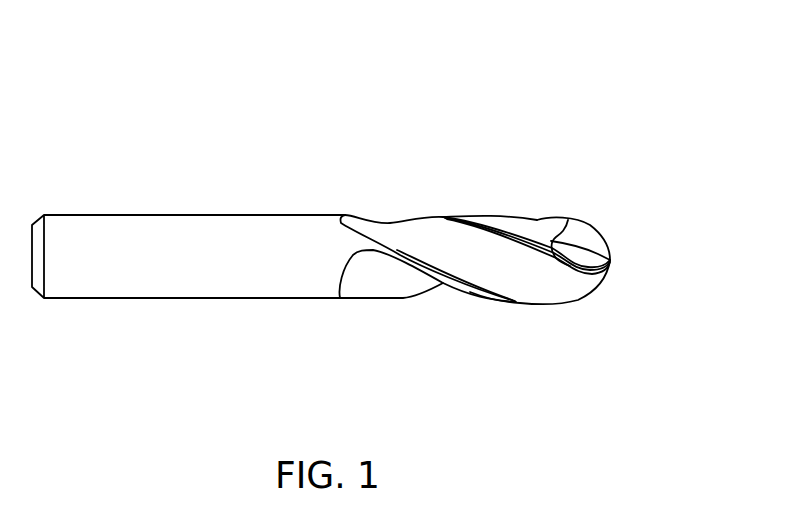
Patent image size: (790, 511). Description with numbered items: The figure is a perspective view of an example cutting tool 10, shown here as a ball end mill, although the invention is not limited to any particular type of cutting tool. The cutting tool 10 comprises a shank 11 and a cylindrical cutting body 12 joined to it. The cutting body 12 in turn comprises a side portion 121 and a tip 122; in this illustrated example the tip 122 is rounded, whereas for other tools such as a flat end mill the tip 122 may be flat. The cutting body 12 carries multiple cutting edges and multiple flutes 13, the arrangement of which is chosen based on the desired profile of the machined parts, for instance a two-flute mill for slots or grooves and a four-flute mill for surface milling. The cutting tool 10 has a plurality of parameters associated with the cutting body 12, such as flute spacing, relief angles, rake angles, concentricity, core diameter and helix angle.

The cutting tool 10 is at (642, 76).
The shank 11 is at (222, 298).
The cylindrical cutting body 12 is at (453, 217).
The side portion 121 is at (513, 290).
The tip 122 is at (582, 222).
The flutes 13 is at (548, 293).